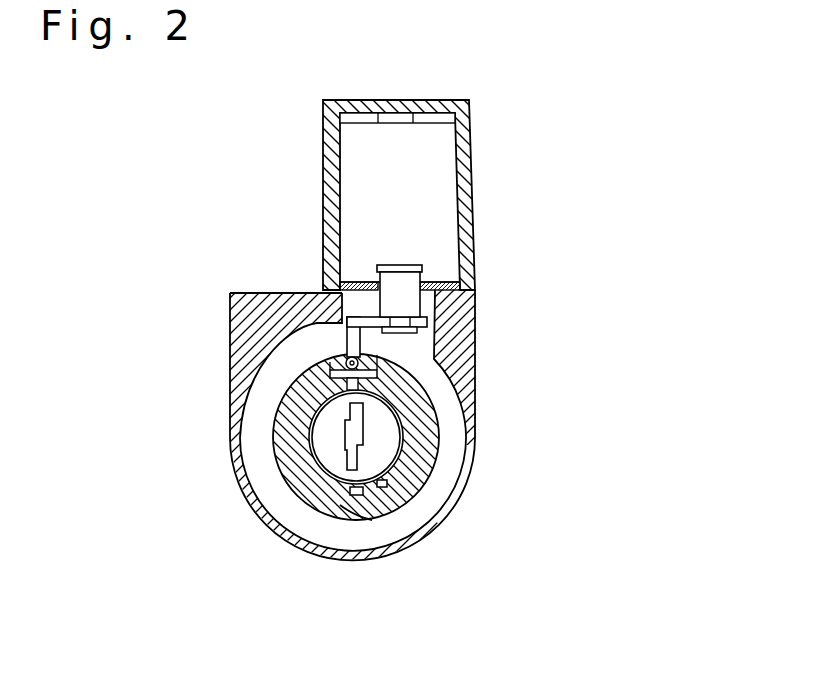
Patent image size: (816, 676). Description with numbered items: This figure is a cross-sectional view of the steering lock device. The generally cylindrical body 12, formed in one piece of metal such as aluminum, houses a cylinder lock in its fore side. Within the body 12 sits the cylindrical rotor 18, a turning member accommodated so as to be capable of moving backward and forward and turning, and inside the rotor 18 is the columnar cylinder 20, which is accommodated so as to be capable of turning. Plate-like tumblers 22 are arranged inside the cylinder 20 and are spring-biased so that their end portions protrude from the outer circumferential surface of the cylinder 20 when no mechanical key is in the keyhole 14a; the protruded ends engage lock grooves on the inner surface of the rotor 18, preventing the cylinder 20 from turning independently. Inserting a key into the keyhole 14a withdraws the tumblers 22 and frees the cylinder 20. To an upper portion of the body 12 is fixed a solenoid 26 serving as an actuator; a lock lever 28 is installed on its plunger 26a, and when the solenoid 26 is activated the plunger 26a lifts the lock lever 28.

The body 12 is at (230, 375).
The keyhole 14a is at (360, 433).
The rotor 18 is at (363, 508).
The cylinder 20 is at (372, 413).
The tumblers 22 is at (377, 484).
The solenoid 26 is at (473, 188).
The plunger 26a is at (405, 307).
The lock lever 28 is at (332, 333).